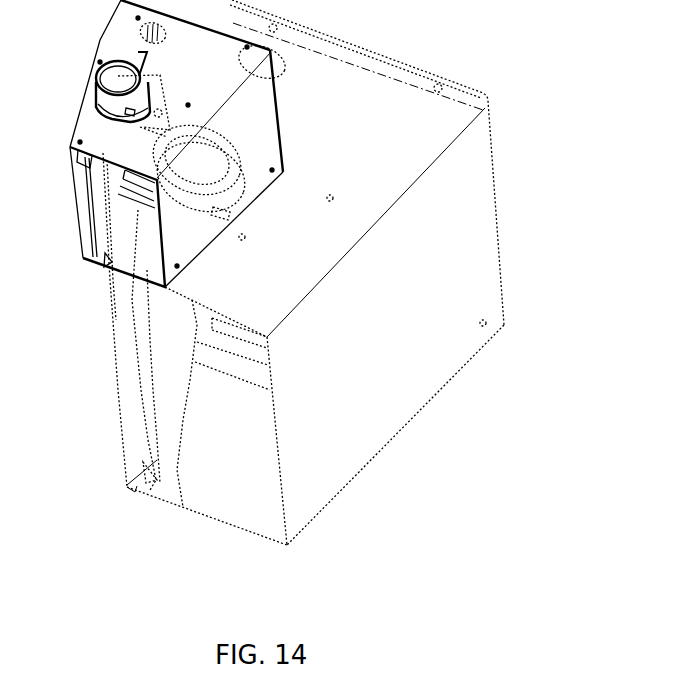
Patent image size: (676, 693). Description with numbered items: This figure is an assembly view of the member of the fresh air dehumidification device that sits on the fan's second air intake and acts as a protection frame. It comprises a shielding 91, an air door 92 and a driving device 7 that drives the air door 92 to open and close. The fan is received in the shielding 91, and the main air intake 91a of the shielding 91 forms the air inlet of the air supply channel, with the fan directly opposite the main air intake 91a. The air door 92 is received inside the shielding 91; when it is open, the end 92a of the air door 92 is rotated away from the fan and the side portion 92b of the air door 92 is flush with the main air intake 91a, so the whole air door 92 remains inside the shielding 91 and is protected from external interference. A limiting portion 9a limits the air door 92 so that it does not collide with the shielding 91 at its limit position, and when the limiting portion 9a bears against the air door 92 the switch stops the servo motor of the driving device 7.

The driving device 7 is at (107, 80).
The limiting portion 9a is at (88, 200).
The shielding 91 is at (197, 243).
The main air intake 91a is at (263, 508).
The air door 92 is at (105, 273).
The end of the air door 92a is at (148, 410).
The side portion of the air door 92b is at (188, 385).